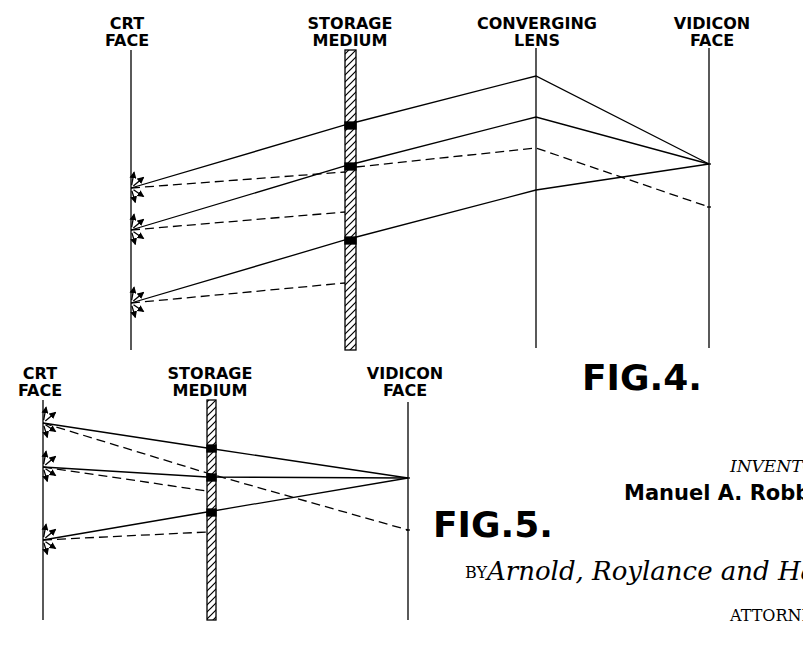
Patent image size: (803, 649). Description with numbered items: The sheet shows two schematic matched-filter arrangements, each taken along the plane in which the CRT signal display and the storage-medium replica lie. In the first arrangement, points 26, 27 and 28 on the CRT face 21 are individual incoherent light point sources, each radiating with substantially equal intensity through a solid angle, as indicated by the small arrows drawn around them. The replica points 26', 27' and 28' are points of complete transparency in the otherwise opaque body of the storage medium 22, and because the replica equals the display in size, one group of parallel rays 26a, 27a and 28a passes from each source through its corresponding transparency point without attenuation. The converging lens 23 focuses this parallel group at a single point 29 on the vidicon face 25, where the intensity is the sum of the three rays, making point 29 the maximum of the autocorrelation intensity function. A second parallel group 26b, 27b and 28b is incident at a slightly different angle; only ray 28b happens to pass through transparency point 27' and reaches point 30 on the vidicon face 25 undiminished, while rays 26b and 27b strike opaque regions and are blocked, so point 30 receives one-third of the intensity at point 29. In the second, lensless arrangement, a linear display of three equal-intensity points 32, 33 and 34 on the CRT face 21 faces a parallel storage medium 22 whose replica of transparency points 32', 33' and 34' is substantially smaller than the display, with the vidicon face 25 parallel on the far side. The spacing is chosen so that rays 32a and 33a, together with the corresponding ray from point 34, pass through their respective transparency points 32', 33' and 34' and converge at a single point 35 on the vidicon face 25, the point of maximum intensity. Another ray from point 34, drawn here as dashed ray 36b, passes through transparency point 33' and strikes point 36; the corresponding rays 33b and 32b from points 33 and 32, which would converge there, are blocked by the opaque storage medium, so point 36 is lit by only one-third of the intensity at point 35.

In FIG. 4, the CRT face 21 is at (132, 82).
In FIG. 5, the CRT face 21 is at (42, 404).
In FIG. 4, the storage medium 22 is at (357, 84).
In FIG. 5, the storage medium 22 is at (216, 419).
In FIG. 4, the converging lens 23 is at (537, 62).
In FIG. 4, the vidicon face 25 is at (710, 82).
In FIG. 5, the vidicon face 25 is at (409, 418).
In FIG. 4, the point 26 is at (122, 302).
In FIG. 4, the point 27 is at (122, 229).
In FIG. 4, the point 28 is at (122, 187).
In FIG. 4, the ray 26a is at (223, 279).
In FIG. 4, the ray 26b is at (308, 288).
In FIG. 4, the ray 27a is at (200, 208).
In FIG. 4, the ray 27b is at (302, 215).
In FIG. 4, the ray 28a is at (208, 167).
In FIG. 4, the ray 28b is at (275, 175).
In FIG. 4, the replica point 26' is at (371, 252).
In FIG. 4, the replica point 27' is at (371, 177).
In FIG. 4, the replica point 28' is at (367, 134).
In FIG. 4, the point 29 is at (711, 164).
In FIG. 4, the point 30 is at (711, 207).
In FIG. 5, the point 32 is at (34, 541).
In FIG. 5, the point 33 is at (34, 472).
In FIG. 5, the point 34 is at (34, 427).
In FIG. 5, the ray 32a is at (160, 521).
In FIG. 5, the ray 32b is at (172, 536).
In FIG. 5, the ray 33a is at (126, 470).
In FIG. 5, the ray 33b is at (108, 480).
In FIG. 5, the light ray from point 34 36b is at (95, 440).
In FIG. 5, the transparency point 32' is at (233, 523).
In FIG. 5, the transparency point 33' is at (227, 488).
In FIG. 5, the transparency point 34' is at (232, 445).
In FIG. 5, the point 35 is at (407, 476).
In FIG. 5, the point 36 is at (408, 530).